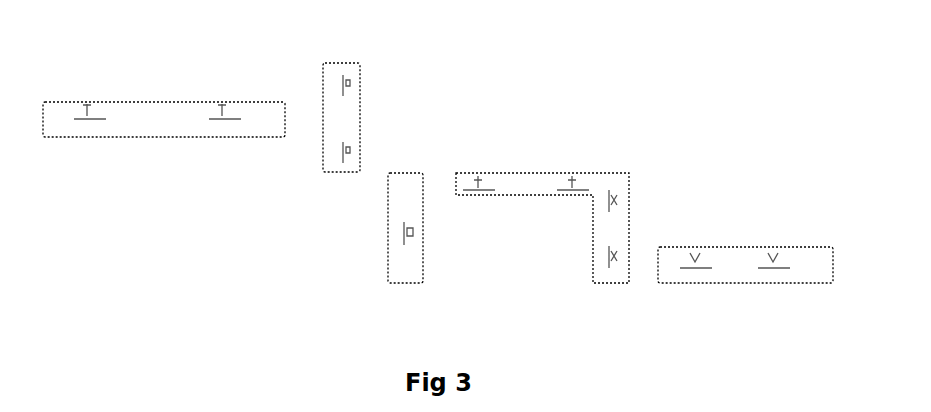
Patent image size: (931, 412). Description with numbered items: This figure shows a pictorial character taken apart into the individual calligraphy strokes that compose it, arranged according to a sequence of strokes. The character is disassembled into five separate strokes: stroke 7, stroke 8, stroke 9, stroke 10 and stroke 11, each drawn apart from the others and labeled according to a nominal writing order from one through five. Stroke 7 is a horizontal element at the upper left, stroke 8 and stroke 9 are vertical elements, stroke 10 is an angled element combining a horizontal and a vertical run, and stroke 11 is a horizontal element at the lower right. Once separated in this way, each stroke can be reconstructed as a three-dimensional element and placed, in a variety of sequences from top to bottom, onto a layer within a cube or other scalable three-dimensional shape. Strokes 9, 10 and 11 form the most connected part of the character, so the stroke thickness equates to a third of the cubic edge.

The stroke 7 is at (123, 117).
The stroke 8 is at (330, 85).
The stroke 9 is at (400, 188).
The stroke 10 is at (485, 194).
The stroke 11 is at (672, 258).